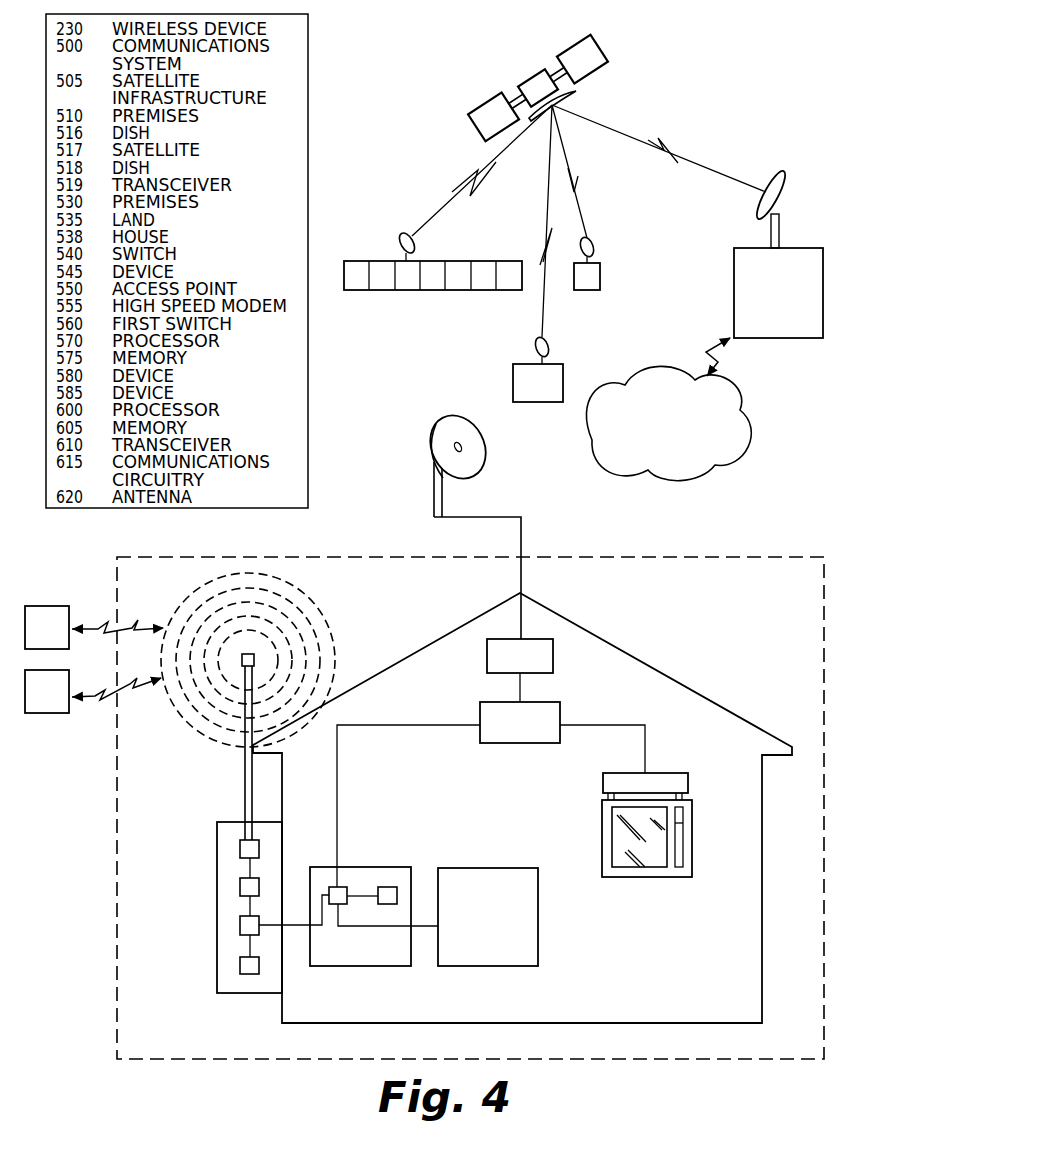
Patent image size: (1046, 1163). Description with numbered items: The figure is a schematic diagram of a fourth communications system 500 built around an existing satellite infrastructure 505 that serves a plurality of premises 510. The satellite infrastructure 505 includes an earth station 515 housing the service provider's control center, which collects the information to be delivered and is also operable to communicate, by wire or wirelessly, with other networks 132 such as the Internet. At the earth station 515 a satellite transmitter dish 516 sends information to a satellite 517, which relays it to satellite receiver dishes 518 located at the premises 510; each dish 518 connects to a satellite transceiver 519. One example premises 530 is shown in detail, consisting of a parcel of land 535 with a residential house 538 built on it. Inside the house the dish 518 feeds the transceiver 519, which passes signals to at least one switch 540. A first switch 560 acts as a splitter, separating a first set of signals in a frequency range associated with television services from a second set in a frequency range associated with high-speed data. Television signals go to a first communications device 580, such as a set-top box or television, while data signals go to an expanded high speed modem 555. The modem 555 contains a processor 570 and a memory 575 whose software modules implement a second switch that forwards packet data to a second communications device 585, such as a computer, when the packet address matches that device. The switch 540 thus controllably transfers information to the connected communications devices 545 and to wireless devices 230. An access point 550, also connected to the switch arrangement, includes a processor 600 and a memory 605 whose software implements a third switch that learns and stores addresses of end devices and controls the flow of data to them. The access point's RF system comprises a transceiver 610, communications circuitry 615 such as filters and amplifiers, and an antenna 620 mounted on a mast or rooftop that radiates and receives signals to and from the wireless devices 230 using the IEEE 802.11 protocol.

The wireless devices 230 is at (58, 611).
The communications system 500 is at (250, 1071).
The satellite infrastructure 505 is at (727, 251).
The premises 510 is at (413, 284).
The earth station 515 is at (777, 330).
The dish 516 is at (785, 192).
The satellite 517 is at (576, 95).
The dish 518 is at (409, 236).
The satellite transceiver 519 is at (553, 661).
The premises 530 is at (751, 554).
The land 535 is at (848, 547).
The house 538 is at (790, 841).
The switch 540 is at (518, 738).
The communications device 545 is at (622, 877).
The access point 550 is at (223, 906).
The high speed modem 555 is at (374, 916).
The first switch 560 is at (491, 794).
The processor 570 is at (341, 886).
The memory 575 is at (392, 886).
The device 580 is at (660, 877).
The device 585 is at (487, 905).
The processor 600 is at (240, 925).
The memory 605 is at (240, 962).
The transceiver 610 is at (240, 847).
The communications circuitry 615 is at (240, 886).
The antenna 620 is at (256, 660).
The other networks 132 is at (676, 468).